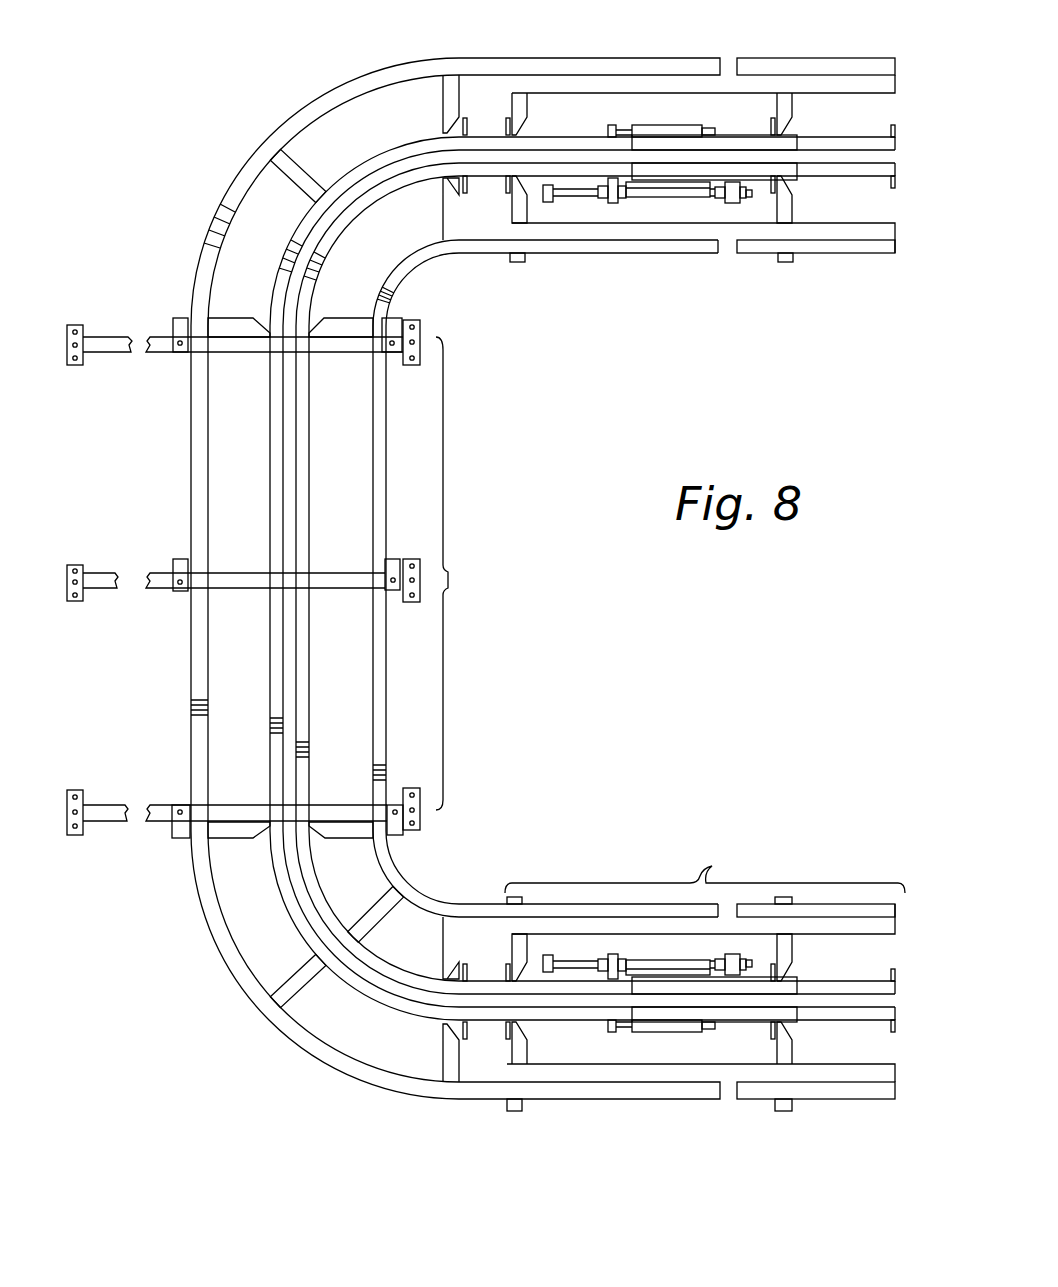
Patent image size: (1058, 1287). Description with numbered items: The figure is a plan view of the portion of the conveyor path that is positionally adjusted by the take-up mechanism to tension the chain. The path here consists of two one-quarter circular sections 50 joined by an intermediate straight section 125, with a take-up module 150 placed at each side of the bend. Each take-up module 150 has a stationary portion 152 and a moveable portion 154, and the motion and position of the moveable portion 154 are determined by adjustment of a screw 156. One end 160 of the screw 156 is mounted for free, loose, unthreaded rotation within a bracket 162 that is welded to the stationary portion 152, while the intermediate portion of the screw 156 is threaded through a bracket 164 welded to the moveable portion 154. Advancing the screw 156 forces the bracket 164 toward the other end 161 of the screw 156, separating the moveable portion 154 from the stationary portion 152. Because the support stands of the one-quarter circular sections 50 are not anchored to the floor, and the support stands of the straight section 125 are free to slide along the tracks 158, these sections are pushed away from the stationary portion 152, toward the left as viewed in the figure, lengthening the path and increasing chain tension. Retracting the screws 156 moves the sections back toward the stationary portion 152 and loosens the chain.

The one-quarter circular section 50 is at (280, 122).
The straight section 125 is at (448, 582).
The take-up module 150 is at (718, 862).
The stationary portion 152 is at (851, 53).
The moveable portion 154 is at (592, 32).
The screw 156 is at (657, 207).
The track 158 is at (122, 331).
The end of screw 160 is at (751, 198).
The other end of screw 161 is at (552, 203).
The bracket 162 is at (731, 203).
The bracket 164 is at (614, 205).